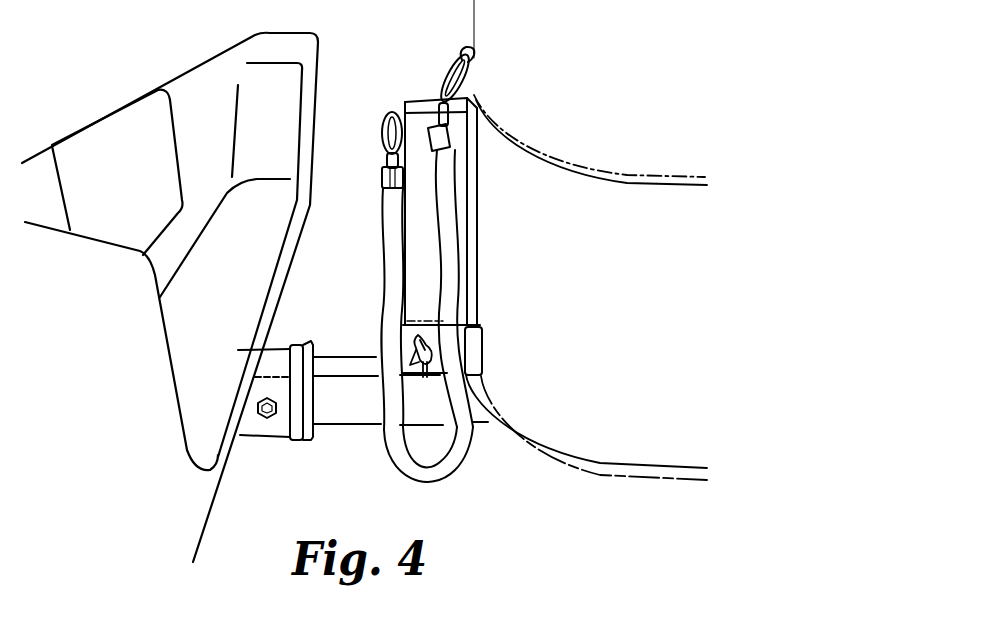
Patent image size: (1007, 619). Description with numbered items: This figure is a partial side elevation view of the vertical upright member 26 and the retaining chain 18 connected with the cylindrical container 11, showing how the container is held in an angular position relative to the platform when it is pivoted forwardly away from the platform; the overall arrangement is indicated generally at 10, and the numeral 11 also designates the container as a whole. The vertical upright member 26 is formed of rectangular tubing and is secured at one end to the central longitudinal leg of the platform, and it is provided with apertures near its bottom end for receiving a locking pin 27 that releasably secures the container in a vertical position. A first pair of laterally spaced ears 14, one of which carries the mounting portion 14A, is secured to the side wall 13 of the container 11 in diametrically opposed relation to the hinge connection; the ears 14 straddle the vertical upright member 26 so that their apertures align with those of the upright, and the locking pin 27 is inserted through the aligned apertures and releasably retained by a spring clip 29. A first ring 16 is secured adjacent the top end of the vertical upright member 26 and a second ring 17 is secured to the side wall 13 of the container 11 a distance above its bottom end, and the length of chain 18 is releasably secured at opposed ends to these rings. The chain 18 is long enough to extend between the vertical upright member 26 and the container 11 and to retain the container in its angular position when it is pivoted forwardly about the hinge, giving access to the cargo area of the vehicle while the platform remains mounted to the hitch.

The restraint assembly 10 is at (433, 36).
The cylindrical container 11 is at (618, 282).
The side wall 13 is at (605, 448).
The ears 14 is at (473, 347).
The mounting plate 14A is at (437, 347).
The first ring 16 is at (382, 118).
The second ring 17 is at (472, 48).
The chain 18 is at (385, 243).
The vertical upright member 26 is at (428, 246).
The locking pin 27 is at (425, 369).
The spring clip 29 is at (413, 340).